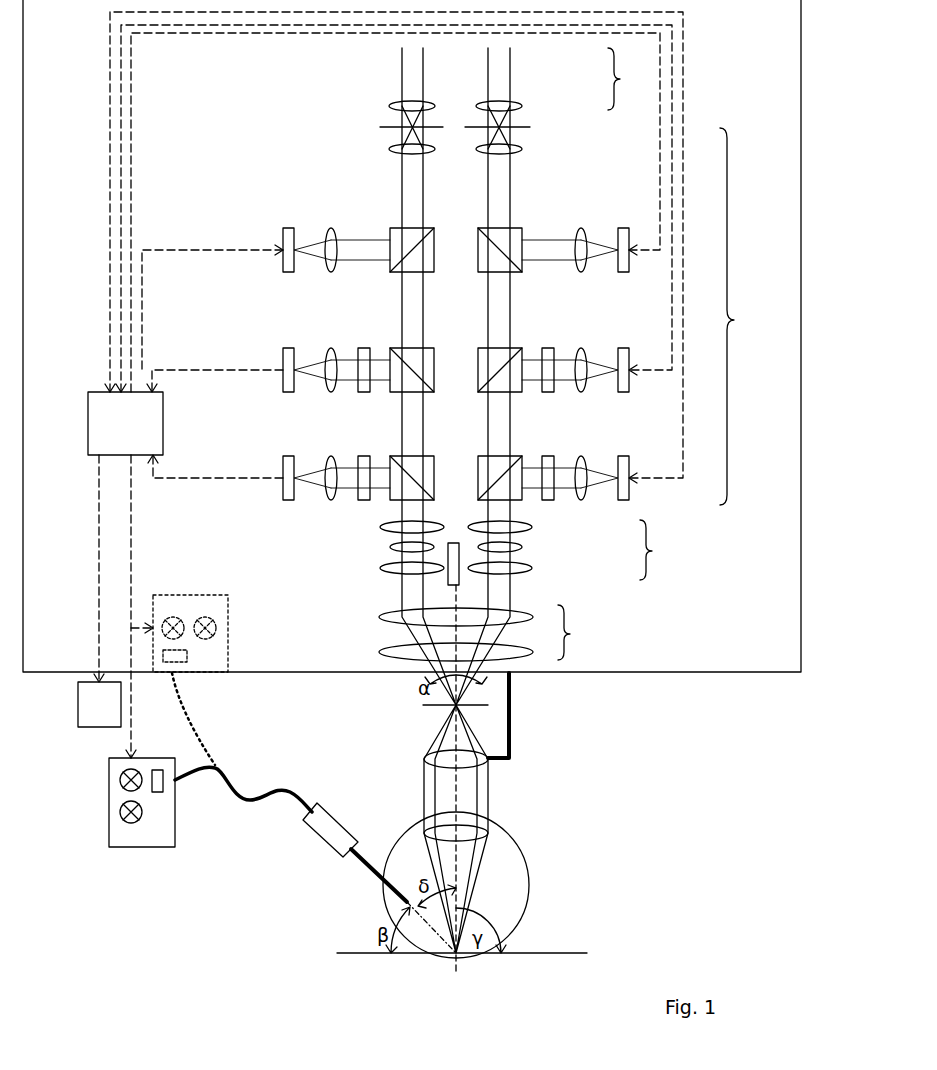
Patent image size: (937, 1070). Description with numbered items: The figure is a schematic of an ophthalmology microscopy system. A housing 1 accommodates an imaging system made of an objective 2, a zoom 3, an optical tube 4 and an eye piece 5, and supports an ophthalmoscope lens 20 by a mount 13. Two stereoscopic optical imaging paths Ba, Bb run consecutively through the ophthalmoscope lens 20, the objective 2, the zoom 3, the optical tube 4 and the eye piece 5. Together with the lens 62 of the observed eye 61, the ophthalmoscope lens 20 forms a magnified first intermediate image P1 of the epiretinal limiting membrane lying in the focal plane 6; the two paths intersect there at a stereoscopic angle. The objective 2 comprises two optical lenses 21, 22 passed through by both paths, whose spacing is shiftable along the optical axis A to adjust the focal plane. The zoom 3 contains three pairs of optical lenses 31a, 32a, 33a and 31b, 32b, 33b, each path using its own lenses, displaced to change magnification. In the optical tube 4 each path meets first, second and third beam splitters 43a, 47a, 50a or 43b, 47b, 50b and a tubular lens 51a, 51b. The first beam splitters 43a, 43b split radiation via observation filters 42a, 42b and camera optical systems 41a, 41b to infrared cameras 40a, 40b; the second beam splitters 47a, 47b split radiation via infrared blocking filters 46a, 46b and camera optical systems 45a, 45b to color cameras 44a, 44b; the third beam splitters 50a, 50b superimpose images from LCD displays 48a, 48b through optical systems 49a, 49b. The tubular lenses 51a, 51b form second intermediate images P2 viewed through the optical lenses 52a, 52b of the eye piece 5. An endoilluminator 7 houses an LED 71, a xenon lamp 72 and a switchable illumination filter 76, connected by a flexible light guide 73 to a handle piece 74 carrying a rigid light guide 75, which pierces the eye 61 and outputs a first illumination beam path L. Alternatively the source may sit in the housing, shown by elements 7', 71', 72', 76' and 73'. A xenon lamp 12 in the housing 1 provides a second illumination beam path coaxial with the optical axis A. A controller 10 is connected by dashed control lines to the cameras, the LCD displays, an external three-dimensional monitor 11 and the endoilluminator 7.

The housing 1 is at (655, 672).
The objective 2 is at (573, 632).
The zoom 3 is at (654, 550).
The optical tube 4 is at (736, 316).
The eye piece 5 is at (621, 79).
The focal plane 6 is at (340, 953).
The endoilluminator 7 is at (112, 807).
The endoilluminator radiation source incorporated in the housing 7' is at (190, 605).
The controller 10 is at (113, 436).
The external 3D-monitor 11 is at (87, 716).
The xenon lamp 12 is at (454, 543).
The mount 13 is at (509, 705).
The ophthalmoscope lens 20 is at (424, 759).
The optical lens 21 is at (380, 652).
The optical lens 22 is at (380, 617).
The optical lens 31a is at (380, 568).
The optical lens 32a is at (390, 547).
The optical lens 33a is at (380, 527).
The optical lens 31b is at (532, 568).
The optical lens 32b is at (522, 547).
The optical lens 33b is at (532, 527).
The infrared camera 40a is at (288, 456).
The camera optical system 41a is at (331, 456).
The observation filter 42a is at (364, 456).
The first beam splitter 43a is at (398, 456).
The infrared camera 40b is at (624, 456).
The camera optical system 41b is at (581, 456).
The observation filter 42b is at (548, 456).
The first beam splitter 43b is at (515, 456).
The color camera 44a is at (288, 348).
The camera optical system 45a is at (331, 348).
The infrared blocking filter 46a is at (364, 348).
The second beam splitter 47a is at (398, 348).
The color camera 44b is at (624, 348).
The camera optical system 45b is at (581, 348).
The infrared blocking filter 46b is at (548, 348).
The second beam splitter 47b is at (515, 348).
The LCD display 48a is at (287, 228).
The optical system 49a is at (331, 228).
The third beam splitter 50a is at (398, 228).
The LCD display 48b is at (623, 228).
The optical system 49b is at (581, 228).
The third beam splitter 50b is at (515, 228).
The tubular lens 51a is at (392, 149).
The optical lens 52a is at (392, 106).
The tubular lens 51b is at (522, 149).
The optical lens 52b is at (522, 106).
The eye 61 is at (531, 880).
The lens of the eye 62 is at (488, 833).
The LED 71 is at (93, 807).
The xenon lamp 72 is at (92, 776).
The flexible light guide 73 is at (243, 768).
The handle piece 74 is at (318, 853).
The rigid light guide 75 is at (362, 880).
The illumination filter 76 is at (162, 768).
The LED 71' is at (218, 602).
The xenon lamp 72' is at (162, 602).
The flexible light guide 73' is at (220, 719).
The illumination filter 76' is at (217, 654).
The optical imaging path Ba is at (402, 70).
The optical imaging path Bb is at (510, 68).
The first intermediate image P1 is at (423, 705).
The second intermediate image P2 is at (462, 127).
The optical axis A is at (460, 792).
The first illumination beam path L is at (435, 953).